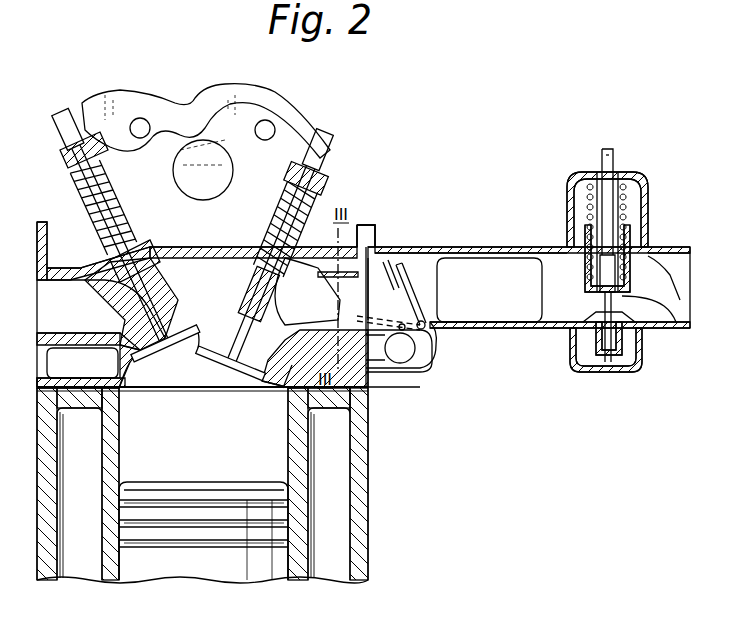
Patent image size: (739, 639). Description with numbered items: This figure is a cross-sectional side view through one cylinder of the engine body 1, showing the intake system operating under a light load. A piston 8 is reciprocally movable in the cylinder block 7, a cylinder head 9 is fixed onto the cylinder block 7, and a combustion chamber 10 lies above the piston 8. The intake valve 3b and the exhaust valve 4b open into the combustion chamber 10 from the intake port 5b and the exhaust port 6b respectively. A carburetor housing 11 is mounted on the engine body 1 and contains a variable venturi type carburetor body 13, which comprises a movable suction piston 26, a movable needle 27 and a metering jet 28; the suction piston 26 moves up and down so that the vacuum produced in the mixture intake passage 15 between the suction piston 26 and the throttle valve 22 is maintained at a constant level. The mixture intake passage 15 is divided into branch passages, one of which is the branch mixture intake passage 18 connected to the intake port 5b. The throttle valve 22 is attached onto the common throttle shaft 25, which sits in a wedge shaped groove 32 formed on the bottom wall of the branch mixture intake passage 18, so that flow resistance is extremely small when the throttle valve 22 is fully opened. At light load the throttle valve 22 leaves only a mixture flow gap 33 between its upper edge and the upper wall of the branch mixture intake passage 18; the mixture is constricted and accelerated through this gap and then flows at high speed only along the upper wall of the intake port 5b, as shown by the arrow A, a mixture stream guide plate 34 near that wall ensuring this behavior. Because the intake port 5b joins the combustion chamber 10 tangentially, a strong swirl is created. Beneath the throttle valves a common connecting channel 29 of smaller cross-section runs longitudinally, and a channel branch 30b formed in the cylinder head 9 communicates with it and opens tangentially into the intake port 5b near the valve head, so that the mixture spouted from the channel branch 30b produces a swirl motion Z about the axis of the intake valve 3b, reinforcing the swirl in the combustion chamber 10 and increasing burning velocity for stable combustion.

The engine body 1 is at (366, 502).
The cylinder block 7 is at (302, 560).
The piston 8 is at (196, 572).
The combustion chamber 10 is at (212, 424).
The arrow A is at (170, 368).
The swirl motion Z is at (255, 386).
The channel branch 30b is at (283, 388).
The exhaust port 6b is at (92, 316).
The intake port 5b is at (327, 308).
The branch mixture intake passage 18 is at (399, 304).
The exhaust valve 4b is at (186, 226).
The intake valve 3b is at (257, 262).
The mixture intake passage 15 is at (558, 264).
The carburetor housing 11 is at (507, 328).
The mixture stream guide plate 34 is at (368, 247).
The mixture flow gap 33 is at (386, 262).
The throttle valve 22 is at (420, 268).
The throttle shaft 25 is at (420, 330).
The wedge shaped groove 32 is at (413, 352).
The common connecting channel 29 is at (412, 376).
The cylinder head 9 is at (375, 392).
The carburetor body 13 is at (650, 170).
The suction piston 26 is at (646, 268).
The needle 27 is at (648, 312).
The metering jet 28 is at (617, 354).